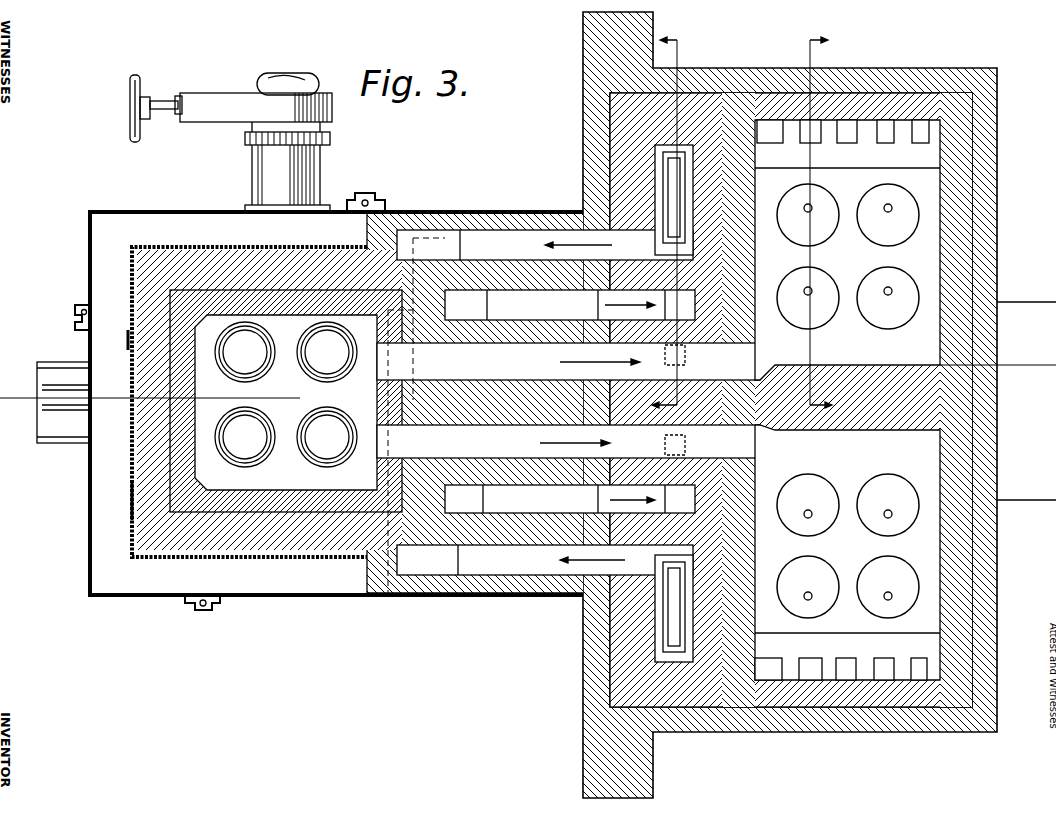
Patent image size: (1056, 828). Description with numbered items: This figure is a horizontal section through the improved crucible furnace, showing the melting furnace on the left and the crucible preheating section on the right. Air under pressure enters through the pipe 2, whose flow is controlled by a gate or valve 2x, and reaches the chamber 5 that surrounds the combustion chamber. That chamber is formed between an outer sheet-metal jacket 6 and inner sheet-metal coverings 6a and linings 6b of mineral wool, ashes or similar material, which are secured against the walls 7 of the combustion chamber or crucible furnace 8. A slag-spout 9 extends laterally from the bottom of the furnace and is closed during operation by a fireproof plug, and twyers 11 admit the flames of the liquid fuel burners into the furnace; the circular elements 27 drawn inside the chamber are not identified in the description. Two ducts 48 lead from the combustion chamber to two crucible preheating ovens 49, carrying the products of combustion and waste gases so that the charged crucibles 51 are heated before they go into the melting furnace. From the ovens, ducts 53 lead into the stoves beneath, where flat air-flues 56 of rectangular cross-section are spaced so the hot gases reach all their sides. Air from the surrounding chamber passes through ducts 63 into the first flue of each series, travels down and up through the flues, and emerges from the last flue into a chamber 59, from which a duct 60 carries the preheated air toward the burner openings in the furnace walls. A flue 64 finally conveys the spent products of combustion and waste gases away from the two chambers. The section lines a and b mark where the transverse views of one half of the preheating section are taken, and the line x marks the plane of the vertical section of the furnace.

The pipe 2 is at (300, 178).
The gate or valve 2x is at (231, 107).
The chamber 5 is at (100, 464).
The sheet-metal jacket 6 is at (88, 498).
The inner sheet-metal coverings 6a is at (128, 340).
The linings 6b is at (166, 248).
The walls 7 is at (152, 498).
The combustion chamber or crucible furnace 8 is at (286, 402).
The slag-spout 9 is at (60, 403).
The twyers 11 is at (78, 310).
The burner tubes 27 is at (286, 394).
The ducts 48 is at (568, 400).
The crucible preheating ovens 49 is at (847, 400).
The charged crucibles 51 is at (848, 401).
The ducts 53 is at (807, 136).
The flat air-flues 56 is at (674, 200).
The chamber 59 is at (660, 236).
The duct 60 is at (545, 402).
The ducts 63 is at (570, 401).
The flue 64 is at (1026, 401).
The section line a— a is at (829, 223).
The section line b— b is at (675, 223).
The section line x— x is at (529, 382).